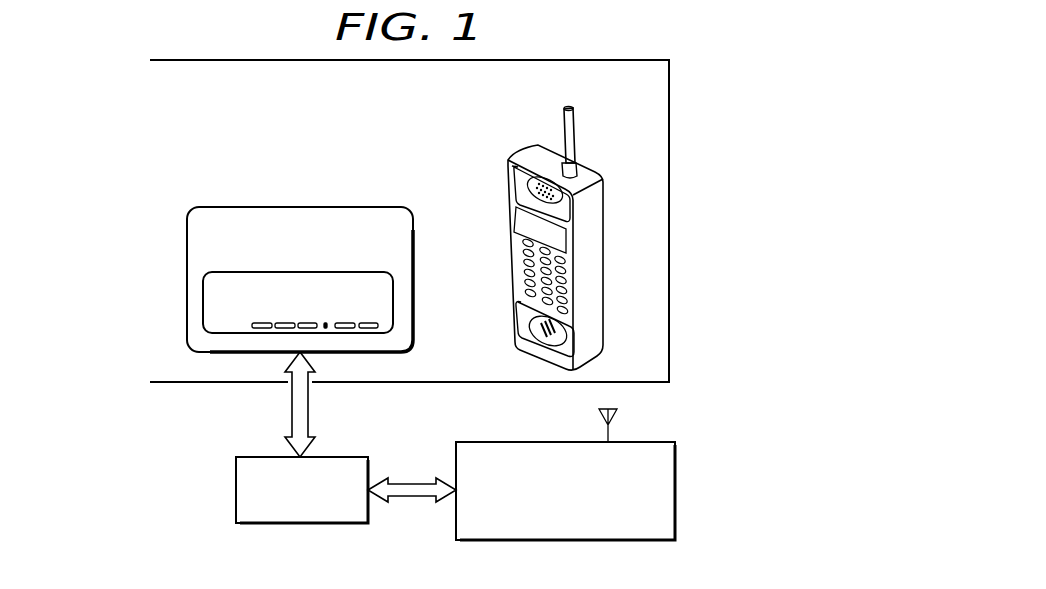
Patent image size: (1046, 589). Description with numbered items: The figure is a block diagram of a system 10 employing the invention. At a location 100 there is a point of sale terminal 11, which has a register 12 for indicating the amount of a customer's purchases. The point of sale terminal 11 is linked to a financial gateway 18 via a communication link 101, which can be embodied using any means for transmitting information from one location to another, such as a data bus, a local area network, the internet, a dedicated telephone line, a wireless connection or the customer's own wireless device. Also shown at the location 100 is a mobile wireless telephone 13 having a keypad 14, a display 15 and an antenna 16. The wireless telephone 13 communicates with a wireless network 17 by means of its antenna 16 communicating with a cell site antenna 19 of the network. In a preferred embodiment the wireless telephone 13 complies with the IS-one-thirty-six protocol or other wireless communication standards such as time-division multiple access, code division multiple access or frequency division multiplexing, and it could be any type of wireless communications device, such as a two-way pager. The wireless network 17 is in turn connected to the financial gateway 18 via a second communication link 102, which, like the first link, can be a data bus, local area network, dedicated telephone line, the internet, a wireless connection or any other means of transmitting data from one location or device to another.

The system 10 is at (70, 385).
The location 100 is at (148, 164).
The point of sale terminal 11 is at (240, 207).
The register 12 is at (351, 272).
The mobile wireless telephone 13 is at (527, 148).
The keypad 14 is at (500, 263).
The display 15 is at (522, 217).
The antenna 16 is at (577, 133).
The wireless network 17 is at (675, 498).
The financial gateway 18 is at (236, 497).
The cell site antenna 19 is at (618, 420).
The communication link 101 is at (292, 407).
The communication link 102 is at (413, 497).